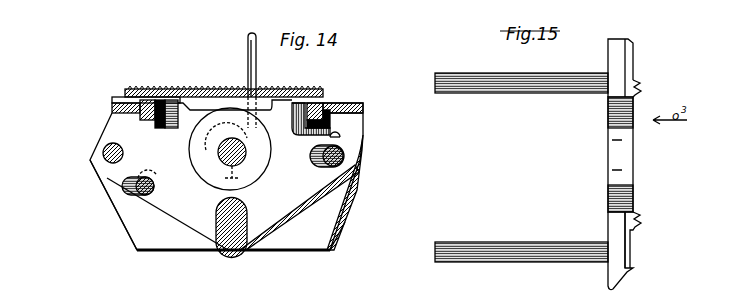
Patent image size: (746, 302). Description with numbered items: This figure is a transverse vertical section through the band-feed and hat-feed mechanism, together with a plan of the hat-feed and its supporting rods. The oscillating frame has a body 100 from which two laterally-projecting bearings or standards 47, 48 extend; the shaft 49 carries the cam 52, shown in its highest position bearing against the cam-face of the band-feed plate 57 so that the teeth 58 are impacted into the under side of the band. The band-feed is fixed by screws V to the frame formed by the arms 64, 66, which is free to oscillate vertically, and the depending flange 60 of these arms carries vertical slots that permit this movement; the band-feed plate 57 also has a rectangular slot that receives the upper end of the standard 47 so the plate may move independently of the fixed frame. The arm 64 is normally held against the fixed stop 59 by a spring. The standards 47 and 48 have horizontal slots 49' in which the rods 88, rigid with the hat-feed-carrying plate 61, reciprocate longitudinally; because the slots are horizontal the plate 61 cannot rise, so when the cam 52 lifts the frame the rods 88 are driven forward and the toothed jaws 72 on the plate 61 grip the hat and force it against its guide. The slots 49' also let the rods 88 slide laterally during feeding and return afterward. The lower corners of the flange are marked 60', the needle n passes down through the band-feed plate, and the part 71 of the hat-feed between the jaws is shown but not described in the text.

In FIG. 14, the laterally-projecting bearing or standard 47 is at (352, 170).
In FIG. 14, the laterally-projecting bearing or standard 48 is at (237, 150).
In FIG. 14, the shaft 49 is at (221, 150).
In FIG. 14, the slot 49' is at (324, 166).
In FIG. 14, the cam 52 is at (272, 158).
In FIG. 14, the band-feed plate 57 is at (363, 106).
In FIG. 14, the teeth 58 is at (190, 95).
In FIG. 14, the fixed stop 59 is at (322, 101).
In FIG. 14, the depending flange or plate 60 is at (104, 210).
In FIG. 14, the cam corner 60' is at (124, 262).
In FIG. 15, the hat-feed-carrying plate 61 is at (623, 42).
In FIG. 14, the arm of the frame 64 is at (112, 104).
In FIG. 14, the arm of the frame 66 is at (365, 114).
In FIG. 15, the bar 71 is at (633, 153).
In FIG. 15, the toothed jaw 72 is at (640, 82).
In FIG. 14, the supporting rod 88 is at (338, 158).
In FIG. 15, the supporting rod 88 is at (525, 93).
In FIG. 14, the body of the oscillating frame 100 is at (223, 253).
In FIG. 14, the needle n is at (257, 67).
In FIG. 14, the screw V is at (127, 100).